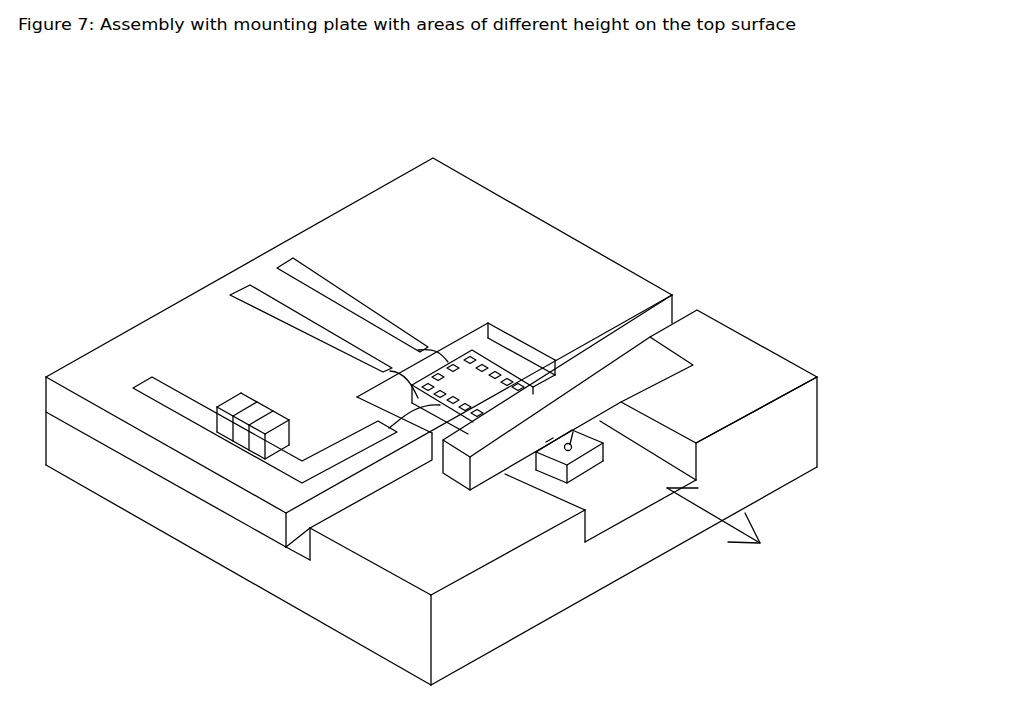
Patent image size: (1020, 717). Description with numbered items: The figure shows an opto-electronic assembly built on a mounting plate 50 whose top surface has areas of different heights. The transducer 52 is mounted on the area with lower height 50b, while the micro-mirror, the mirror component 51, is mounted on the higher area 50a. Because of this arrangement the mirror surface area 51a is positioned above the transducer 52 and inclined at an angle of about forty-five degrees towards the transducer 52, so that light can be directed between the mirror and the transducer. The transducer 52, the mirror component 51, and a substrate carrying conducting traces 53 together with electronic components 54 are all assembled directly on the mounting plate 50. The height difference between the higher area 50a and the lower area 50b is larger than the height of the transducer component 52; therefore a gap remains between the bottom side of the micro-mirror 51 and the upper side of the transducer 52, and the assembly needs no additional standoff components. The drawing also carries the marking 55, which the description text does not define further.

The mounting plate 50 is at (350, 598).
The higher area 50a is at (750, 378).
The area with lower height 50b is at (620, 495).
The mirror component 51 is at (612, 358).
The mirror surface area 51a is at (338, 559).
The transducer 52 is at (570, 451).
The conducting traces 53 is at (387, 268).
The electronic components 54 is at (252, 412).
The direction arrow 55 is at (730, 515).